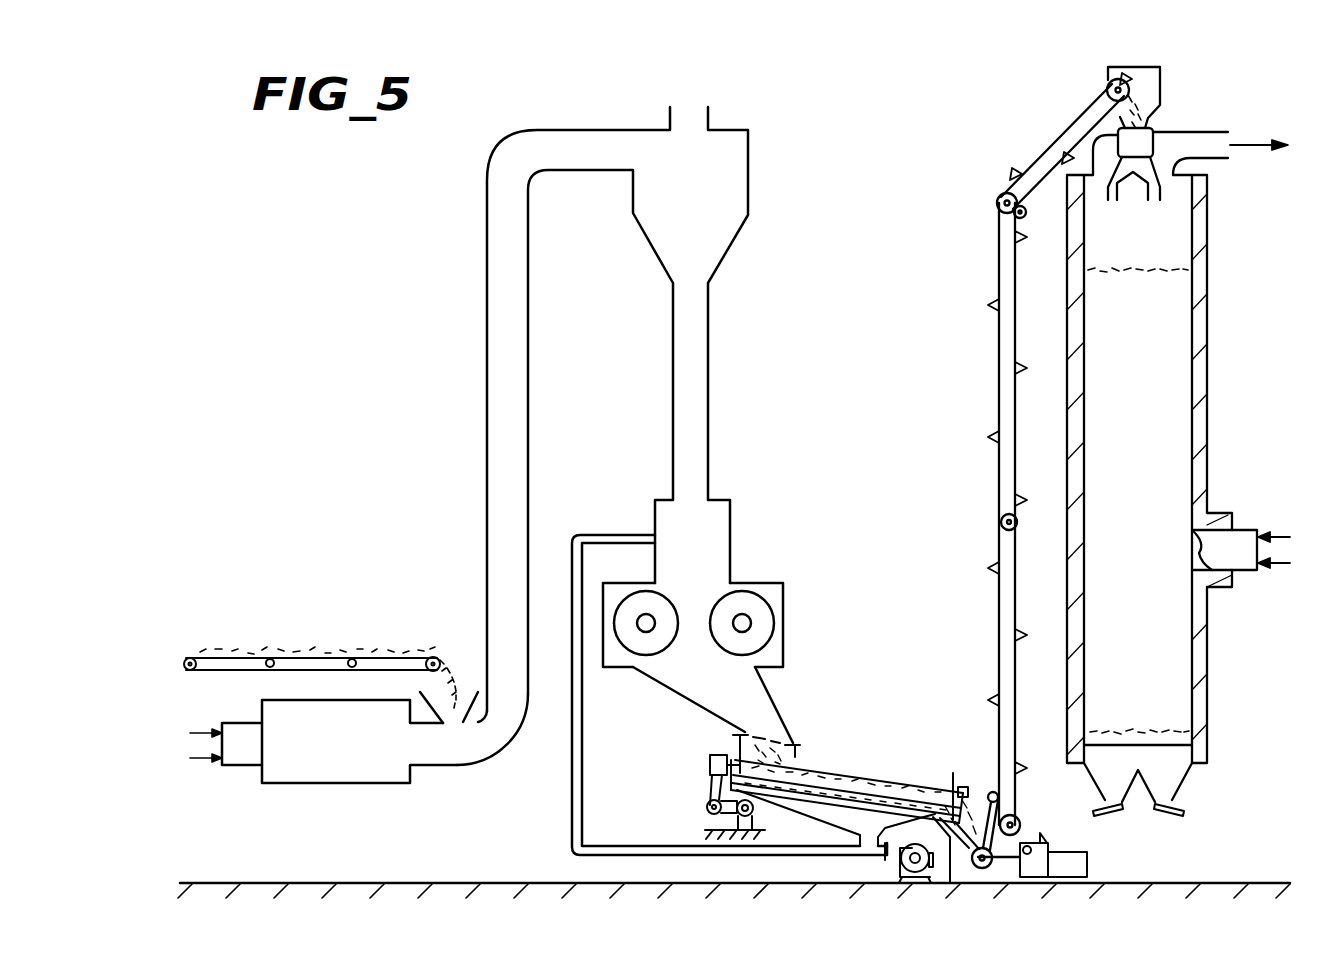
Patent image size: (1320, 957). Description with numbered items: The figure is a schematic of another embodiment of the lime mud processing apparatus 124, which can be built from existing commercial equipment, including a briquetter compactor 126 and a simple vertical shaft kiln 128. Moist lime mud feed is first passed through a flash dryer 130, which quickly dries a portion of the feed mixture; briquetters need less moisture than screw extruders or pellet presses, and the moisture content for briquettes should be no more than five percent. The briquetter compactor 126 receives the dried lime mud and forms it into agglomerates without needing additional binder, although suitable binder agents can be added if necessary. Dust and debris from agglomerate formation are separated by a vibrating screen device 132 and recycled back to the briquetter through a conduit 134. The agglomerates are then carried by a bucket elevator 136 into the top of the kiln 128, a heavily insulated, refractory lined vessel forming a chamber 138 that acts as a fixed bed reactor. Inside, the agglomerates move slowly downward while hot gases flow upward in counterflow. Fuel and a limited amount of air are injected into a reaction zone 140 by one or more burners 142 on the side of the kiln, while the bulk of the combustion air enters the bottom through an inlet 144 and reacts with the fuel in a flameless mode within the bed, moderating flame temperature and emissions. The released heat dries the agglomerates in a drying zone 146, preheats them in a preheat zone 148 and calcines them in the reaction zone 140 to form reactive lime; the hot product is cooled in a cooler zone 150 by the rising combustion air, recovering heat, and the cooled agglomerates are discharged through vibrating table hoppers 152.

The apparatus 124 is at (922, 152).
The briquetter compactor 126 is at (766, 583).
The vertical shaft kiln 128 is at (1065, 283).
The flash dryer 130 is at (453, 772).
The vibrating screen device 132 is at (856, 766).
The conduit 134 is at (615, 532).
The bucket elevator 136 is at (1000, 637).
The chamber 138 is at (1084, 428).
The reaction zone 140 is at (1163, 550).
The burner 142 is at (1247, 572).
The inlet 144 is at (1184, 799).
The drying zone 146 is at (1150, 318).
The preheat zone 148 is at (1165, 418).
The cooler zone 150 is at (1150, 672).
The vibrating table hoppers 152 is at (1177, 815).